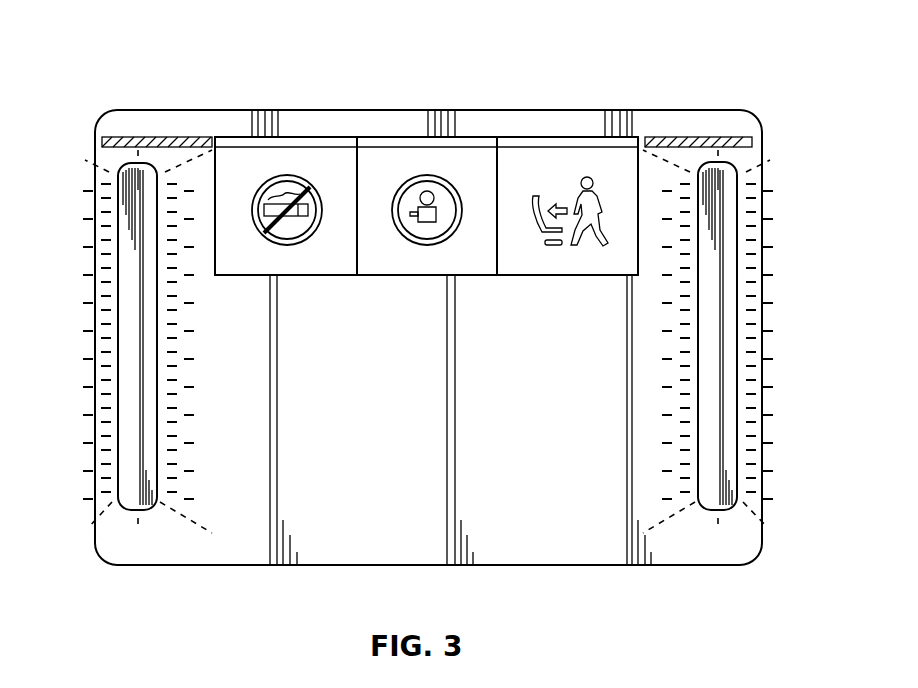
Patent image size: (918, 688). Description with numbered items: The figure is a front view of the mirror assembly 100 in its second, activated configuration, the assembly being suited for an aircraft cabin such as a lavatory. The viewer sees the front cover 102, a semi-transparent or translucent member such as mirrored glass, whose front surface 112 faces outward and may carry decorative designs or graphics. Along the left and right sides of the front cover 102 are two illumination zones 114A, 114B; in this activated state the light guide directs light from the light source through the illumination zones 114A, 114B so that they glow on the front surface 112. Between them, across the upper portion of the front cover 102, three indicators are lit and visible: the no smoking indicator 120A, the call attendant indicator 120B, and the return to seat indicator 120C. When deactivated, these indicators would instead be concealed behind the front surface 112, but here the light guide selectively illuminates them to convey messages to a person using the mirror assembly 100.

The mirror assembly 100 is at (752, 28).
The front cover 102 is at (745, 388).
The front surface 112 is at (748, 173).
The illumination zone 114A is at (130, 277).
The illumination zone 114B is at (718, 257).
The no smoking indicator 120A is at (280, 278).
The call attendant indicator 120B is at (370, 278).
The return to seat indicator 120C is at (545, 278).